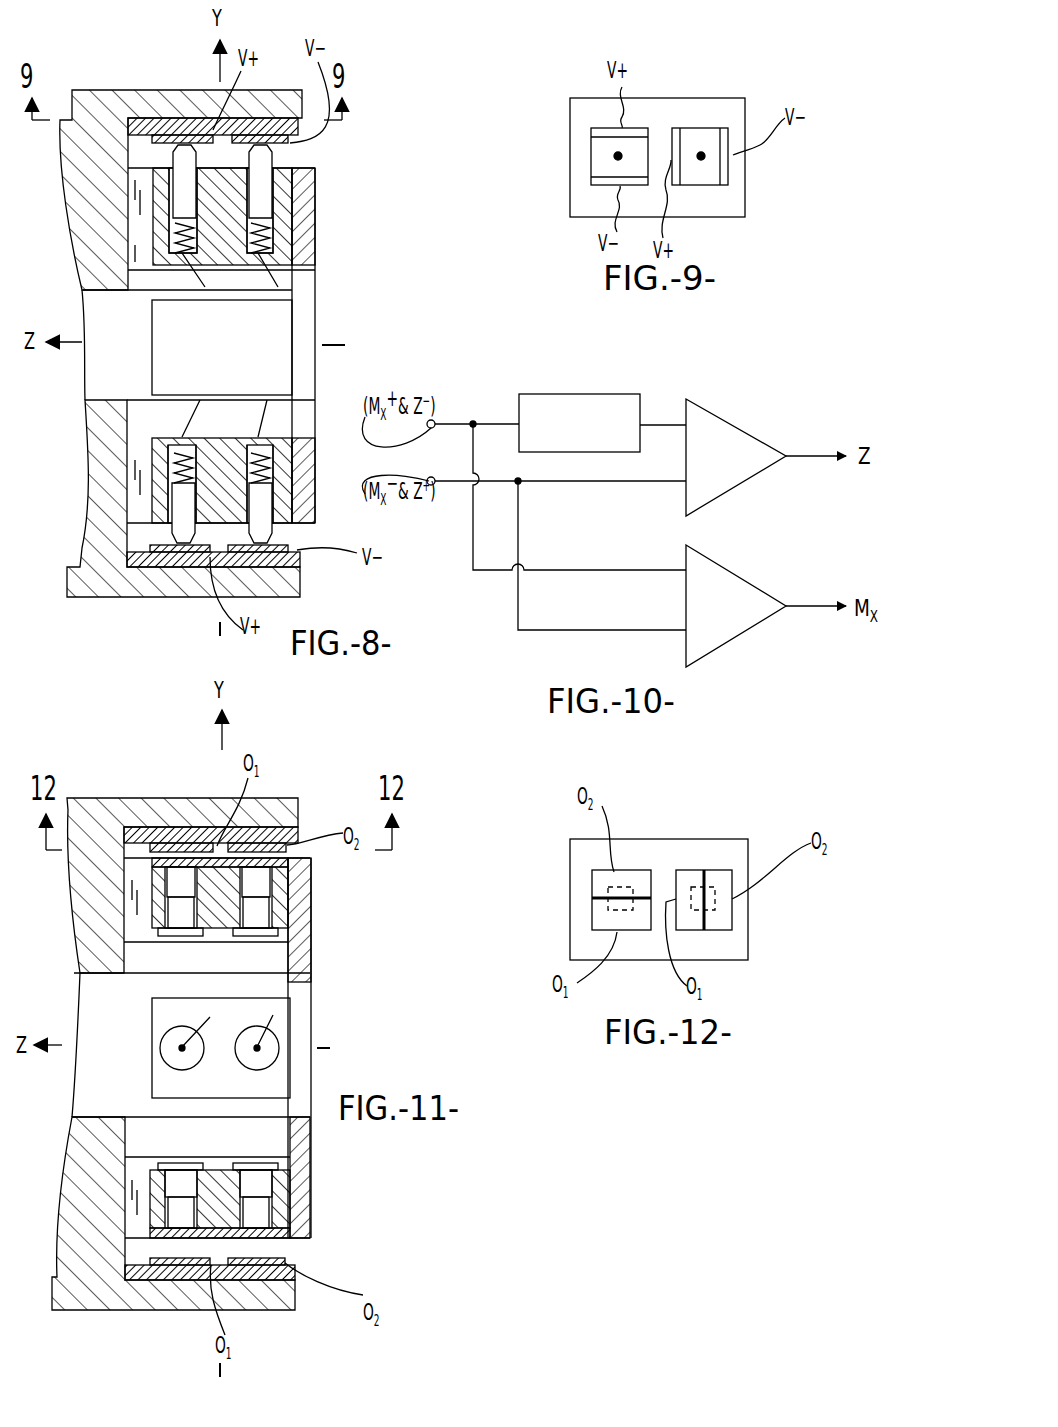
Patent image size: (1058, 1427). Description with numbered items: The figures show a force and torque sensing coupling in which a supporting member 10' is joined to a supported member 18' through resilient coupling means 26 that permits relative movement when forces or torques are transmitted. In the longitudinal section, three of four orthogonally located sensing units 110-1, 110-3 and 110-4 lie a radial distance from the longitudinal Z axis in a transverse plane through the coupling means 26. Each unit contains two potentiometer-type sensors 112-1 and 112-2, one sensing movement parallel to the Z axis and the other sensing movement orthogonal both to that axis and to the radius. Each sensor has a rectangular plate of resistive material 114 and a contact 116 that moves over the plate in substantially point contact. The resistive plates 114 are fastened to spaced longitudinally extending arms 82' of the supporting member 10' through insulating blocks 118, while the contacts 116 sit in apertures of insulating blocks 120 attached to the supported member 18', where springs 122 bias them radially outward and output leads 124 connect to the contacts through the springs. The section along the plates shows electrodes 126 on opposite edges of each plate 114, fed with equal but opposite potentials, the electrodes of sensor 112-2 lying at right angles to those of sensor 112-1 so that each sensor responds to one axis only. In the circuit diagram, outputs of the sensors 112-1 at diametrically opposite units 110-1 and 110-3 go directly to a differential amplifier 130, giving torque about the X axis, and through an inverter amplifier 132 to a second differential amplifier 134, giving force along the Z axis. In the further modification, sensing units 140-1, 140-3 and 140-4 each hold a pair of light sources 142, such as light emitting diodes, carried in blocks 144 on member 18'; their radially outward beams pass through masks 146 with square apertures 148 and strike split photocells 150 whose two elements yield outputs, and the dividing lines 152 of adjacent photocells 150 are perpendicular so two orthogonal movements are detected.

In FIG. 8, the supporting member 10' is at (52, 558).
In FIG. 11, the supporting member 10' is at (52, 954).
In FIG. 8, the supported member 18' is at (336, 345).
In FIG. 11, the supported member 18' is at (337, 1048).
In FIG. 8, the resilient coupling means 26 is at (140, 275).
In FIG. 11, the resilient coupling means 26 is at (147, 958).
In FIG. 8, the longitudinally extending arms 82' is at (174, 340).
In FIG. 11, the longitudinally extending arms 82' is at (175, 1060).
In FIG. 8, the force and torque sensing unit 110-1 is at (322, 150).
In FIG. 8, the force and torque sensing unit 110-3 is at (312, 542).
In FIG. 8, the force and torque sensing unit 110-4 is at (300, 312).
In FIG. 8, the potentiometer-type sensor 112-1 is at (256, 207).
In FIG. 9, the potentiometer-type sensor 112-1 is at (733, 167).
In FIG. 8, the potentiometer-type sensor 112-2 is at (168, 188).
In FIG. 9, the potentiometer-type sensor 112-2 is at (586, 167).
In FIG. 8, the resistive plate 114 is at (180, 215).
In FIG. 9, the resistive plate 114 is at (597, 145).
In FIG. 8, the contact 116 is at (255, 207).
In FIG. 9, the contact 116 is at (618, 152).
In FIG. 8, the insulating block 118 is at (282, 130).
In FIG. 9, the insulating block 118 is at (577, 112).
In FIG. 11, the insulating block 118 is at (293, 1273).
In FIG. 12, the insulating block 118 is at (570, 856).
In FIG. 8, the insulating mounting block 120 is at (160, 252).
In FIG. 8, the spring 122 is at (178, 233).
In FIG. 8, the output lead 124 is at (186, 255).
In FIG. 9, the electrode 126 is at (637, 130).
In FIG. 10, the differential amplifier 130 is at (724, 566).
In FIG. 10, the inverter amplifier 132 is at (589, 394).
In FIG. 10, the differential amplifier 134 is at (706, 407).
In FIG. 11, the sensing unit 140-1 is at (308, 832).
In FIG. 11, the sensing unit 140-3 is at (310, 1247).
In FIG. 11, the sensing unit 140-4 is at (295, 1030).
In FIG. 11, the light source 142 is at (257, 1025).
In FIG. 11, the block 144 is at (283, 917).
In FIG. 11, the mask 146 is at (307, 880).
In FIG. 11, the square aperture 148 is at (185, 858).
In FIG. 11, the split photocell 150 is at (182, 841).
In FIG. 12, the split photocell 150 is at (615, 874).
In FIG. 12, the dividing line 152 is at (604, 899).